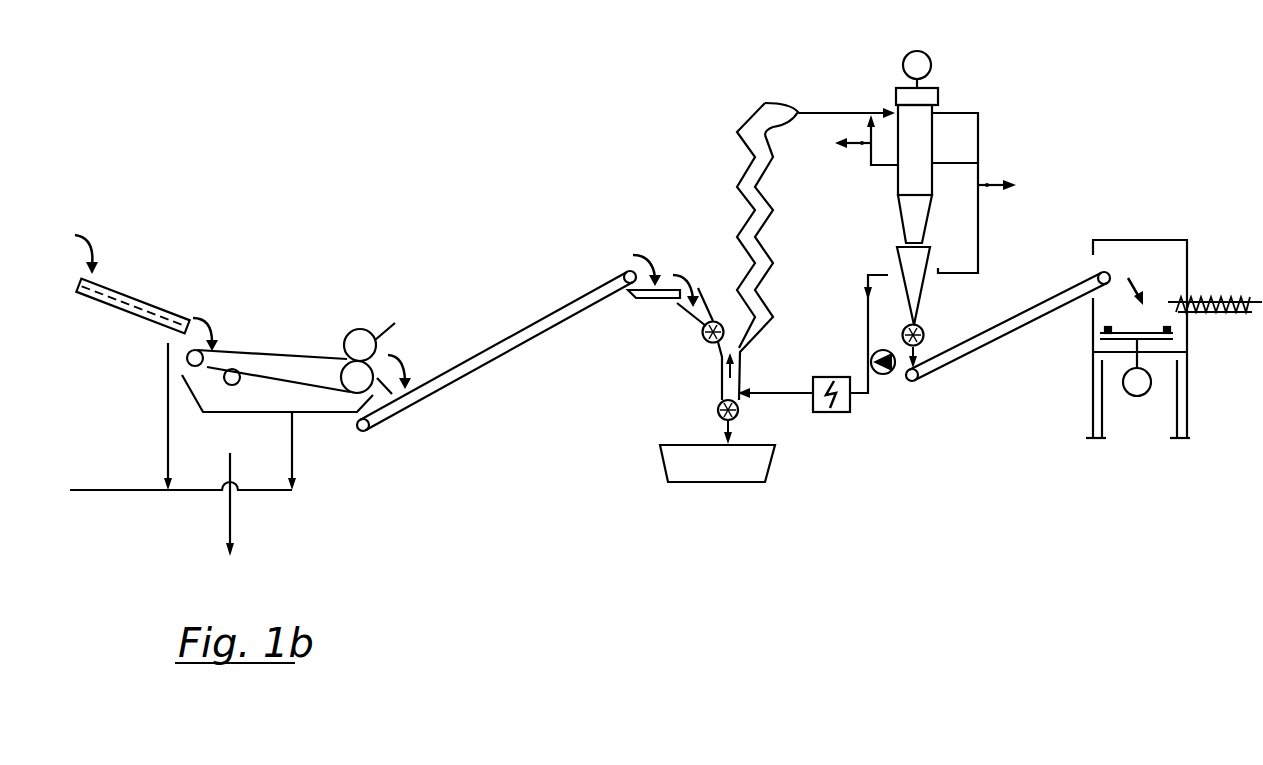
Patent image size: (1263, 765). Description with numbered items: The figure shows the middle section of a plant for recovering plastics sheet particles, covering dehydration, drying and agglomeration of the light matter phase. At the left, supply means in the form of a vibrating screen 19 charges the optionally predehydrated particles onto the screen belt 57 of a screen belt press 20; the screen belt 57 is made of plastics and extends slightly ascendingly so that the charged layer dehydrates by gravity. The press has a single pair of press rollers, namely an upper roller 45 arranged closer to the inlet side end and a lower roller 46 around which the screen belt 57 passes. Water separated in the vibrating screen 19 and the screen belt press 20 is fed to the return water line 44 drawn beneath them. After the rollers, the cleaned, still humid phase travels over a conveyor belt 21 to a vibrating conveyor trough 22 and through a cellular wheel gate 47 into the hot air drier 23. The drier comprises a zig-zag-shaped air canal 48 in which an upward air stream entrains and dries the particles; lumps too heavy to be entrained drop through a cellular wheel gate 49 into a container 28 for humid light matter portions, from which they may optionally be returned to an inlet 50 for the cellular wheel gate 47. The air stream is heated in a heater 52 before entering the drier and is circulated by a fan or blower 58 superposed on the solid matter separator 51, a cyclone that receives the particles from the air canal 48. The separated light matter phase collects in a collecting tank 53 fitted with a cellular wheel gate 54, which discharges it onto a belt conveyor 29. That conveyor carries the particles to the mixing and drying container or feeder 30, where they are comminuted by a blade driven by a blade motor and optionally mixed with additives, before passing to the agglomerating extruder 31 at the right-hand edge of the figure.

The vibrating screen 19 is at (145, 300).
The screen belt press 20 is at (280, 350).
The screen belt 57 is at (300, 355).
The upper press roller 45 is at (359, 338).
The lower press roller 46 is at (362, 387).
The return water line 44 is at (107, 492).
The conveyor belt 21 is at (542, 322).
The vibrating conveyor trough 22 is at (650, 298).
The hot air drier 23 is at (745, 170).
The zig-zag-shaped air canal 48 is at (765, 250).
The inlet 50 is at (710, 320).
The cellular wheel gate 47 is at (708, 342).
The cellular wheel gate 49 is at (742, 412).
The container for humid light matter portions 28 is at (705, 476).
The heater 52 is at (845, 405).
The solid matter separator 51 is at (925, 143).
The collecting tank 53 is at (910, 260).
The cellular wheel gate 54 is at (927, 331).
The fan or blower 58 is at (910, 92).
The belt conveyor 29 is at (1030, 312).
The mixing and drying container 30 is at (1142, 276).
The agglomerating extruder 31 is at (1223, 312).